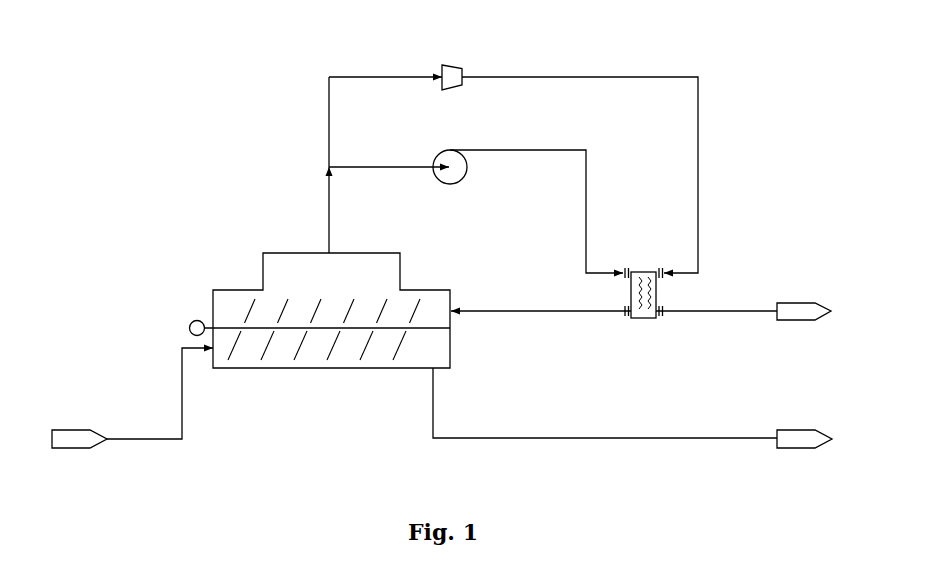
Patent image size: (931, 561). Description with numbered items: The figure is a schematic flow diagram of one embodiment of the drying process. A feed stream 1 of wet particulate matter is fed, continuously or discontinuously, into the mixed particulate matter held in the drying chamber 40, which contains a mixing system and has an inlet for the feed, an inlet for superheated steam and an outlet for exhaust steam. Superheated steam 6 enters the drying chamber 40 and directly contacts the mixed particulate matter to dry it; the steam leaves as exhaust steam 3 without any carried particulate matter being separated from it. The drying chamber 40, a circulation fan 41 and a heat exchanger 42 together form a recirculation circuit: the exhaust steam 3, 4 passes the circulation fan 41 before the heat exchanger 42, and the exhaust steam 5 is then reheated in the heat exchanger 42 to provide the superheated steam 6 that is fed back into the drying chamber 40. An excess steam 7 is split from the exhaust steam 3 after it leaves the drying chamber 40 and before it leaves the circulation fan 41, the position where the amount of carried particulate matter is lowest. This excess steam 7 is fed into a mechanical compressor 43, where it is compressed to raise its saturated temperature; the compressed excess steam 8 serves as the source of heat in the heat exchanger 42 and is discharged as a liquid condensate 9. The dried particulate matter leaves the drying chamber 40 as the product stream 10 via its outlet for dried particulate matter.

The feed stream 1 is at (132, 398).
The exhaust steam 3 is at (320, 165).
The exhaust steam 4 is at (389, 155).
The exhaust steam 5 is at (539, 203).
The superheated steam 6 is at (541, 302).
The excess steam 7 is at (385, 62).
The compressed excess steam 8 is at (580, 166).
The liquid condensate 9 is at (743, 304).
The product stream 10 is at (632, 408).
The drying chamber 40 is at (320, 310).
The circulation fan 41 is at (450, 154).
The heat exchanger 42 is at (643, 281).
The mechanical compressor 43 is at (452, 63).